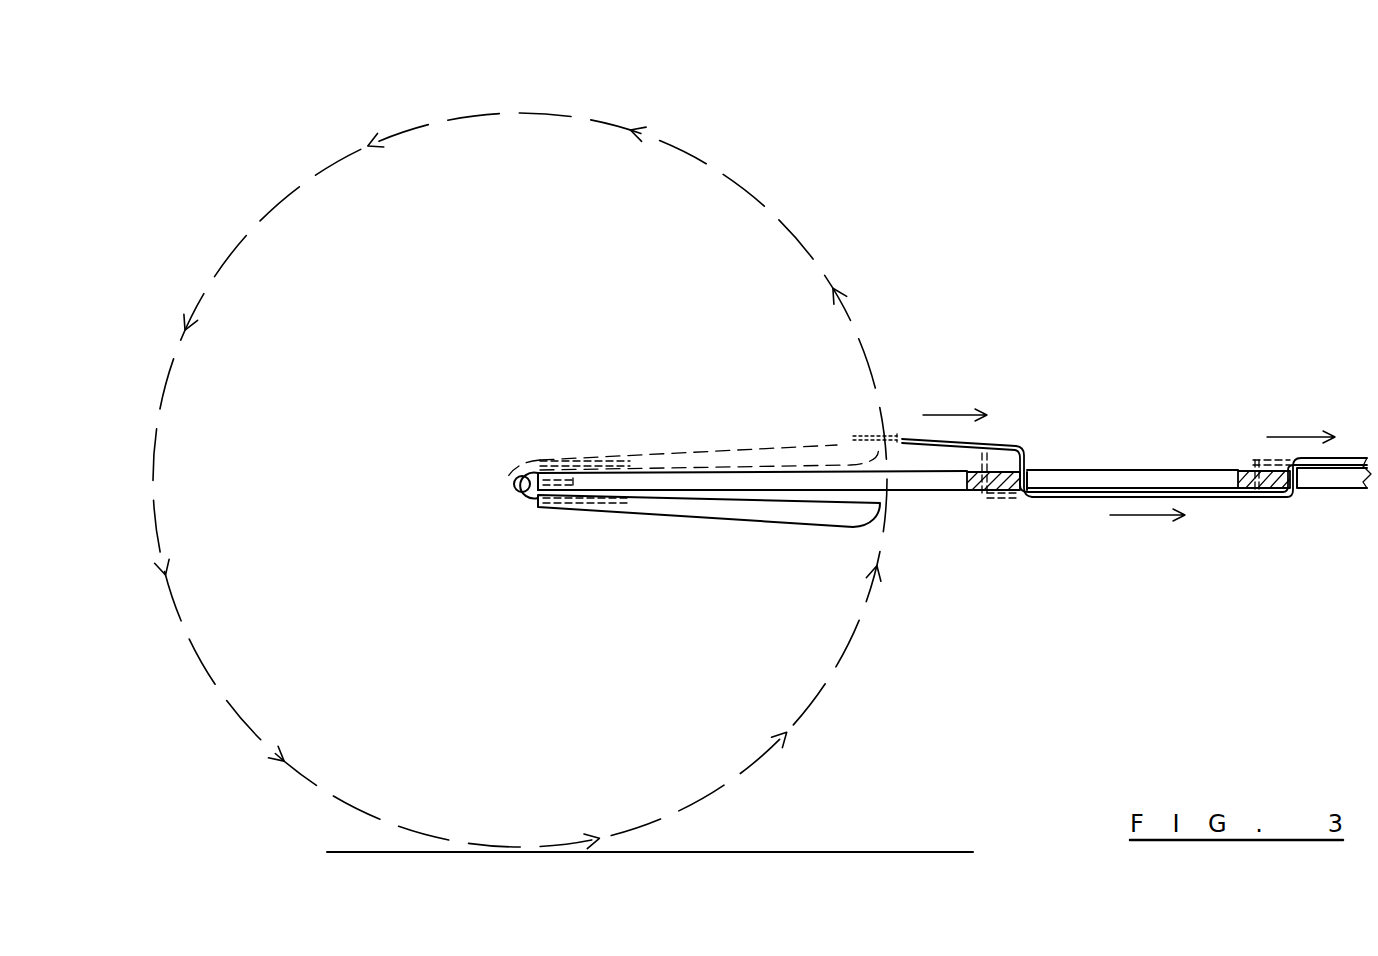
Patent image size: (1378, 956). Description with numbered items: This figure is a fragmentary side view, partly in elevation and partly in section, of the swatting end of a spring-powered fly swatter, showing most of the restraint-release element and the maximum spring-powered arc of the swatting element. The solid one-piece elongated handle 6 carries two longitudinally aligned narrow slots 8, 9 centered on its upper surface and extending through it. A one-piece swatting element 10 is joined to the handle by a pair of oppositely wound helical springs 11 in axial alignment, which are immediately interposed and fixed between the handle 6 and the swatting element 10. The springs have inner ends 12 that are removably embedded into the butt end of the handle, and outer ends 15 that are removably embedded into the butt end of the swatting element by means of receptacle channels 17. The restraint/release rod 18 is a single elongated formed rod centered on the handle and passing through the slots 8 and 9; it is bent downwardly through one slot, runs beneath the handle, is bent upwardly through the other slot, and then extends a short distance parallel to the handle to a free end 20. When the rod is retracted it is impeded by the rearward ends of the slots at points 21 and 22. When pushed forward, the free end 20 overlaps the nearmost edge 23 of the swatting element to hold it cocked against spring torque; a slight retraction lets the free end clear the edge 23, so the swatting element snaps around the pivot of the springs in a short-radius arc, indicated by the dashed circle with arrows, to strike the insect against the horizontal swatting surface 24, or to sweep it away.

The handle 6 is at (1173, 470).
The slot 8 is at (1247, 467).
The slot 9 is at (977, 492).
The swatting element 10 is at (797, 525).
The helical springs 11 is at (508, 479).
The inner ends 12 is at (573, 482).
The outer ends 15 is at (622, 503).
The receptacle channels 17 is at (537, 466).
The restraint/release rod 18 is at (1080, 503).
The free end 20 is at (902, 438).
The point 21 is at (1027, 463).
The point 22 is at (1298, 490).
The edge 23 is at (877, 445).
The swatting surface 24 is at (792, 852).